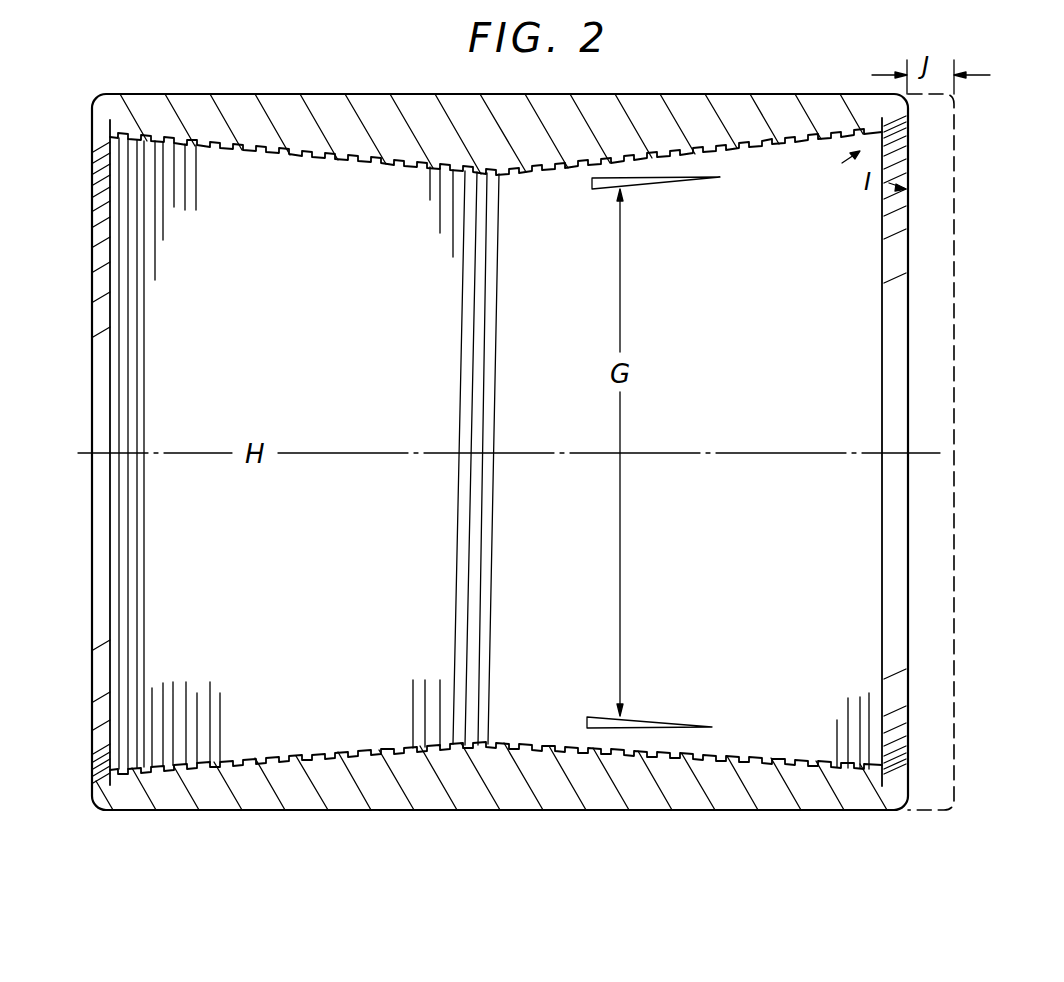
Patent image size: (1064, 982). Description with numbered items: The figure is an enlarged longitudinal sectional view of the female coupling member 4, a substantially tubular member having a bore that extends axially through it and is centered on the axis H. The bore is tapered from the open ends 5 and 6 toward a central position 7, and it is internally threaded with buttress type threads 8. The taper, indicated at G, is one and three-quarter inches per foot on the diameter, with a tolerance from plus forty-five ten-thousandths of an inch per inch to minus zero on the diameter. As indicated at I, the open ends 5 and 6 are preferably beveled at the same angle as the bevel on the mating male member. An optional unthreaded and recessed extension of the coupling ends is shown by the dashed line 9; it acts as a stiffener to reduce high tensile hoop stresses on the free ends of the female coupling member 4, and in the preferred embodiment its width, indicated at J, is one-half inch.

The female coupling member 4 is at (632, 794).
The open end 5 is at (907, 636).
The open end 6 is at (92, 655).
The central position 7 is at (498, 171).
The buttress type threads 8 is at (409, 178).
The unthreaded and recessed extension 9 is at (953, 292).